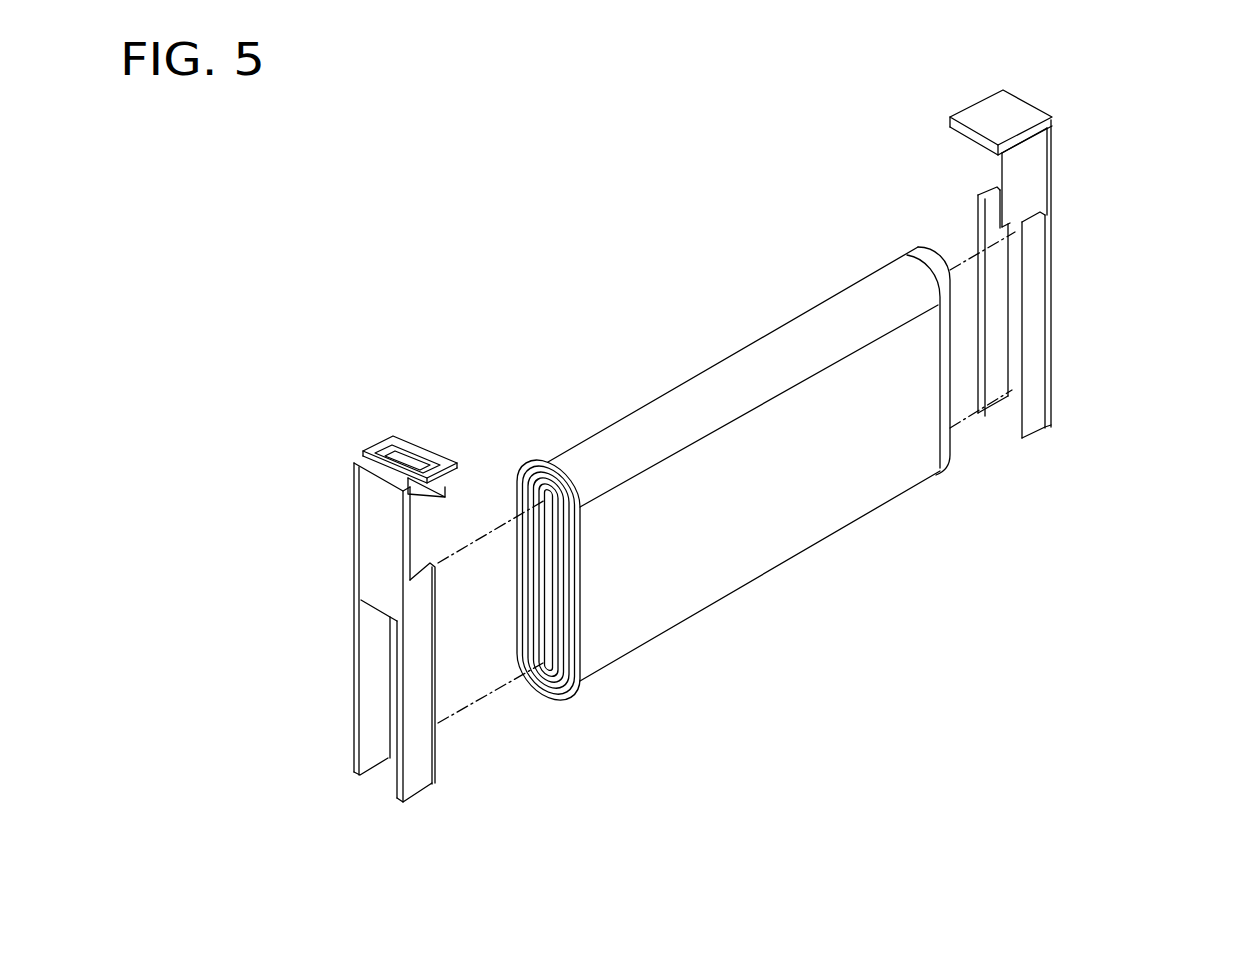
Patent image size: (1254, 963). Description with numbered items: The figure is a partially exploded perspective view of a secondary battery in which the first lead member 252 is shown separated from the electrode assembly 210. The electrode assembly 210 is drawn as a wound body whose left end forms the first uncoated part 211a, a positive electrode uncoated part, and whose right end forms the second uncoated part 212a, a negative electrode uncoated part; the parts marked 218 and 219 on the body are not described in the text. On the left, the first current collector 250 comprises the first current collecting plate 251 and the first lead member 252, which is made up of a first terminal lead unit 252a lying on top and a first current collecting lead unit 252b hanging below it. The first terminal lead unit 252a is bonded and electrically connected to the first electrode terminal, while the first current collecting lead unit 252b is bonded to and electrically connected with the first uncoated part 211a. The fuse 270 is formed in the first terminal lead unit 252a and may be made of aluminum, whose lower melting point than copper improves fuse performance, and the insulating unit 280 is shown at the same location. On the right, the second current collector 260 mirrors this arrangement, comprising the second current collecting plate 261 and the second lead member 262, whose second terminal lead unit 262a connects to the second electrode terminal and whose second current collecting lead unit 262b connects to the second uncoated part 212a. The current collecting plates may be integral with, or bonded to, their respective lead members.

The electrode assembly 210 is at (756, 508).
The first uncoated part 211a is at (574, 682).
The second uncoated part 212a is at (947, 462).
The front surface of electrode assembly 218 is at (763, 527).
The bottom edge of electrode assembly 219 is at (693, 617).
The first current collector 250 is at (320, 585).
The first current collecting plate 251 is at (338, 682).
The first lead member 252 is at (343, 585).
The first terminal lead unit 252a is at (368, 426).
The first current collecting lead unit 252b is at (363, 569).
The second current collector 260 is at (1091, 254).
The second current collecting plate 261 is at (1095, 325).
The second lead member 262 is at (1061, 249).
The second terminal lead unit 262a is at (1020, 108).
The second current collecting lead unit 262b is at (1045, 185).
The fuse 270 is at (443, 493).
The insulating unit 280 is at (430, 453).